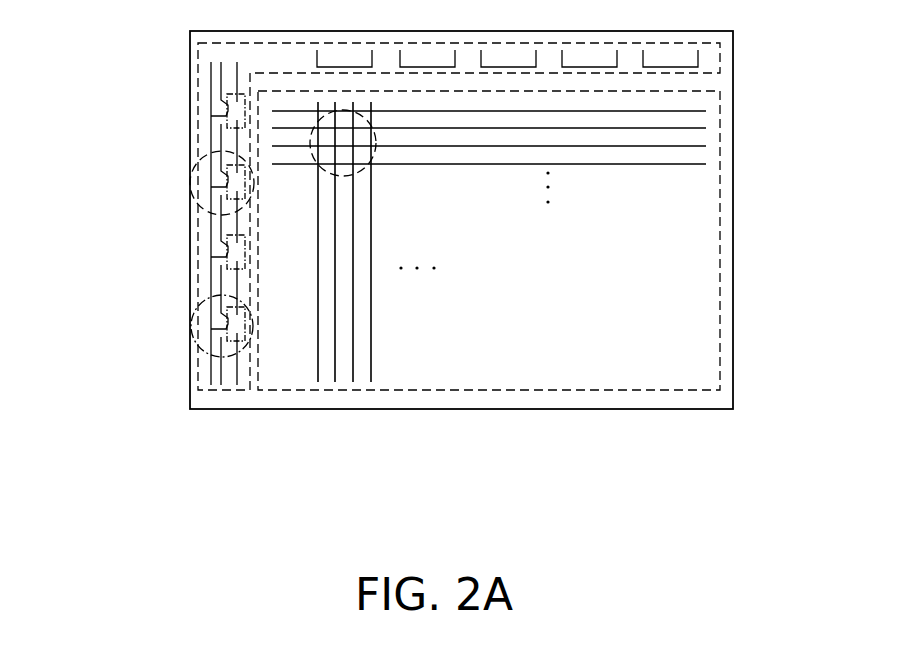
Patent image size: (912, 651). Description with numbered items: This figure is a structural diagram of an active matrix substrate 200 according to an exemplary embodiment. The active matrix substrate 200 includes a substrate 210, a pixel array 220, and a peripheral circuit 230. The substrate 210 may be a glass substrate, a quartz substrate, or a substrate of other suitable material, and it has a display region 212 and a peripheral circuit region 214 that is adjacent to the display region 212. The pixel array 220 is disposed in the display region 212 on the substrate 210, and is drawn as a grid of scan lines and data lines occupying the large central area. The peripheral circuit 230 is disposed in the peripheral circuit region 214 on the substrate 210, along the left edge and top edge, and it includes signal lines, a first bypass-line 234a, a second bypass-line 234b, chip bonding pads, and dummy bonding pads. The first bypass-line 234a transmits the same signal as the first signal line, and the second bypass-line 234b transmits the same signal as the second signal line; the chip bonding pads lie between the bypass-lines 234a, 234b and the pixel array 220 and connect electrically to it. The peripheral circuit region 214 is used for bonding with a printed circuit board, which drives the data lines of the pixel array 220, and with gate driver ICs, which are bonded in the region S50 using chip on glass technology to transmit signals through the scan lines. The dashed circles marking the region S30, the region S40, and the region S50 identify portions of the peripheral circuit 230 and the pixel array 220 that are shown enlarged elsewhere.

The active matrix substrate 200 is at (663, 550).
The substrate 210 is at (727, 357).
The display region 212 is at (720, 252).
The peripheral circuit region 214 is at (720, 60).
The pixel array 220 is at (383, 173).
The peripheral circuit 230 is at (132, 223).
The first bypass-line 234a is at (215, 283).
The second bypass-line 234b is at (215, 307).
The region S30 is at (191, 176).
The region S40 is at (326, 112).
The region S50 is at (200, 353).